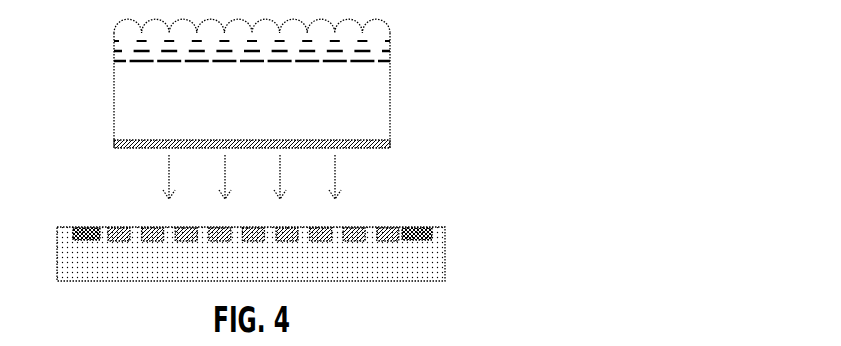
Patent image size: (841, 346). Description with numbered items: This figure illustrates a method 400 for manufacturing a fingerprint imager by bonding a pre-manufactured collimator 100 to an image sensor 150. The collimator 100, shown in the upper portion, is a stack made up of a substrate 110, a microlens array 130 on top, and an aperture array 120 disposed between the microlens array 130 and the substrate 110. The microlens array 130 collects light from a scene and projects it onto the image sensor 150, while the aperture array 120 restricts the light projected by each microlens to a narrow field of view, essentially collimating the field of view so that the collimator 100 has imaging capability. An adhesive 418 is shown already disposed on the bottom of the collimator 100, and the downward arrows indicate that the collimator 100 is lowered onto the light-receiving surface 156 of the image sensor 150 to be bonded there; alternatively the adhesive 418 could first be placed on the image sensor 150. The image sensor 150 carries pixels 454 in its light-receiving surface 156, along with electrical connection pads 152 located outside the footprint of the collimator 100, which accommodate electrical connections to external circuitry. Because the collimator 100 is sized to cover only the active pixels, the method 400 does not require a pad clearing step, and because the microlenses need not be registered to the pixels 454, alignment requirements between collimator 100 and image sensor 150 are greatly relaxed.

The collimator 100 is at (56, 66).
The substrate 110 is at (390, 100).
The aperture array 120 is at (390, 47).
The microlens array 130 is at (412, 24).
The adhesive 418 is at (390, 145).
The image sensor 150 is at (446, 254).
The electrical connection pads 152 is at (86, 226).
The light-receiving surface 156 is at (133, 218).
The pixels 454 is at (350, 245).
The method 400 is at (600, 132).